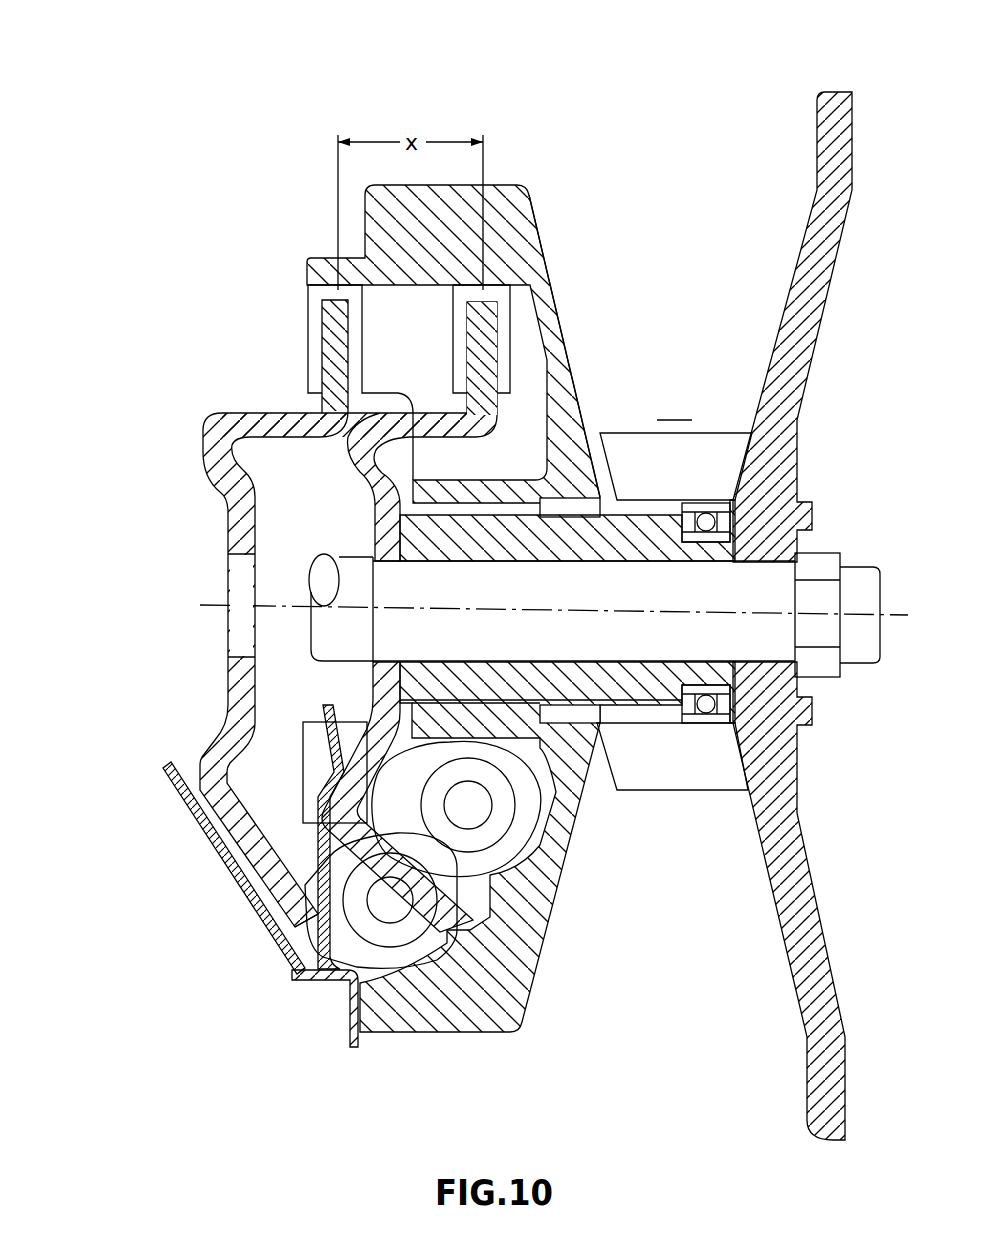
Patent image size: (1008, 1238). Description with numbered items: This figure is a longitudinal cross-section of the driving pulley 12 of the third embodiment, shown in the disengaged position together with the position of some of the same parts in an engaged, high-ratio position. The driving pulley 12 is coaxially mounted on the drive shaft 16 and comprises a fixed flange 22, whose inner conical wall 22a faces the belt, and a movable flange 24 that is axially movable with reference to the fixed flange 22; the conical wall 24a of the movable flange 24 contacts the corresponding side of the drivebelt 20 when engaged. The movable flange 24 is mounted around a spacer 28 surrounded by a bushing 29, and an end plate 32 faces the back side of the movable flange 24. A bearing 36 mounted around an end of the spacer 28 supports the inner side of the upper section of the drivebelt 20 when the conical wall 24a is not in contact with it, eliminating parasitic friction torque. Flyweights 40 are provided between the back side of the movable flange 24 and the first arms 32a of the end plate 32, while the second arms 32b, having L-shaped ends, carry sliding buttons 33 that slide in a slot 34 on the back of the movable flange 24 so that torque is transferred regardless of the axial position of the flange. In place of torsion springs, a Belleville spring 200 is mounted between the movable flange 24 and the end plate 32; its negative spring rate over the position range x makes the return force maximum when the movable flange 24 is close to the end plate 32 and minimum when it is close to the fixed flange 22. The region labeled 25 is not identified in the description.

The driving pulley 12 is at (236, 160).
The drive shaft 16 is at (330, 623).
The drivebelt 20 is at (640, 440).
The fixed flange 22 is at (787, 576).
The inner conical wall 22a is at (815, 140).
The movable flange 24 is at (471, 306).
The conical wall 24a is at (547, 268).
The gap 25 is at (675, 404).
The spacer 28 is at (652, 690).
The bushing 29 is at (400, 700).
The end plate 32 is at (228, 575).
The first arms 32a is at (250, 843).
The second arms 32b is at (270, 420).
The sliding buttons 33 is at (315, 315).
The slot 34 is at (390, 290).
The bearing 36 is at (703, 714).
The flyweights 40 is at (303, 977).
The Belleville spring 200 is at (270, 923).